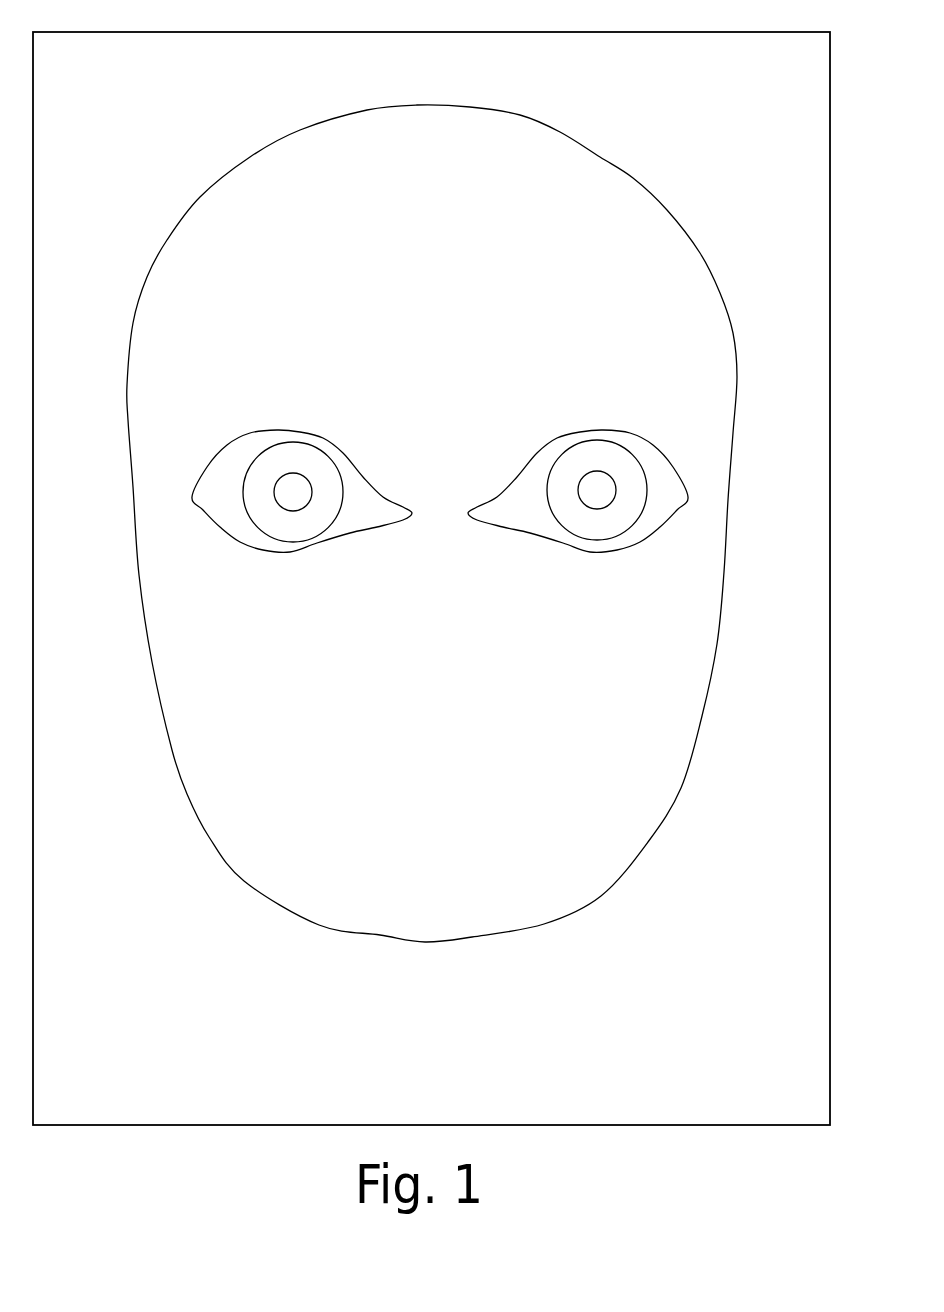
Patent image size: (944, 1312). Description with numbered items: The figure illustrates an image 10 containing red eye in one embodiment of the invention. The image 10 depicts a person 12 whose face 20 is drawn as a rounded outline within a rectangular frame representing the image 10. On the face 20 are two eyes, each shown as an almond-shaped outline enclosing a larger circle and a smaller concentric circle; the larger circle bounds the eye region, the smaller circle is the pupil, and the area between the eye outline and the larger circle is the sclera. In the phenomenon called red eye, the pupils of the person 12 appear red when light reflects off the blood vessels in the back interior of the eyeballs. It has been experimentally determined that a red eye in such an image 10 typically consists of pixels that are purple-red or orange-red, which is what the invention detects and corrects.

The image 10 is at (830, 32).
The person 12 is at (683, 155).
The face 20 is at (698, 354).